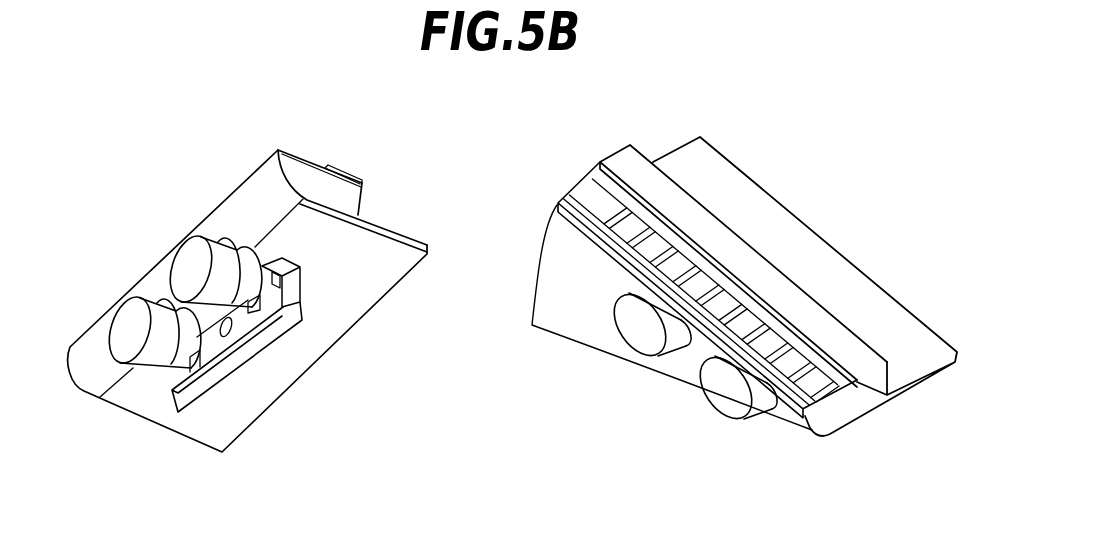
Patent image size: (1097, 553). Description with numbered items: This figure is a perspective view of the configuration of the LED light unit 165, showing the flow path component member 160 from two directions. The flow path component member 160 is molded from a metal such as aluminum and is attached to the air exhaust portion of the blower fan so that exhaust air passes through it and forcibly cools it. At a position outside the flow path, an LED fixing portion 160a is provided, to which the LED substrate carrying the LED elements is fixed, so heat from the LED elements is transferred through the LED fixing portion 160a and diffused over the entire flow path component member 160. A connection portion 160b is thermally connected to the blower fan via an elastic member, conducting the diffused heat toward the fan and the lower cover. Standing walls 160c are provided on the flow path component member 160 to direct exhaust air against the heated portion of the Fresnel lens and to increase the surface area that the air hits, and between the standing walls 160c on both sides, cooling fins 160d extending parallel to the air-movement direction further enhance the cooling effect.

The flow path component member 160 is at (238, 215).
The LED fixing portion 160a is at (221, 384).
The connection portion 160b is at (337, 310).
The standing walls 160c is at (343, 195).
The cooling fins 160d is at (765, 318).
The LED light unit 165 is at (528, 182).